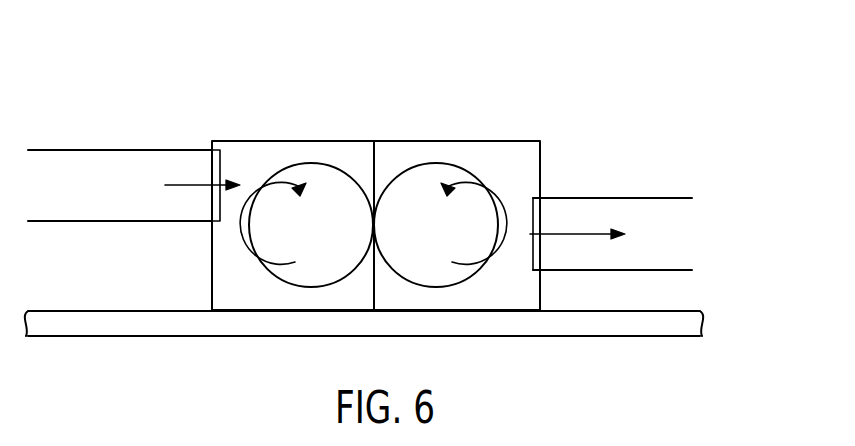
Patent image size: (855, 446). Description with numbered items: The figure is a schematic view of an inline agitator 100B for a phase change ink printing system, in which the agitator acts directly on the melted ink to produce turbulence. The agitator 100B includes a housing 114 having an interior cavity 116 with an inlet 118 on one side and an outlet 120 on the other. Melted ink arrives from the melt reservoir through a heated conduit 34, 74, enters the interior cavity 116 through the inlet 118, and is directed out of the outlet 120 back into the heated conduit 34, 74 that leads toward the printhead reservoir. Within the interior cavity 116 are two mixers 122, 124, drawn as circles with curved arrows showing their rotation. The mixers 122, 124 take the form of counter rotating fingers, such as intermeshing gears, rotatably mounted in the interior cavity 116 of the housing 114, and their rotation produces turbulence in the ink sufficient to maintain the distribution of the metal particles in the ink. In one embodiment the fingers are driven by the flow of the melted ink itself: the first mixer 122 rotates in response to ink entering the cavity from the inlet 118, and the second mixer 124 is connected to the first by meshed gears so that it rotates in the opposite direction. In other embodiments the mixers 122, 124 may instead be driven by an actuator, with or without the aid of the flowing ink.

The agitator 100B is at (205, 115).
The heated conduit 34 is at (388, 182).
The heated conduit 74 is at (118, 150).
The housing 114 is at (337, 140).
The interior cavity 116 is at (397, 163).
The inlet 118 is at (222, 172).
The outlet 120 is at (533, 228).
The mixer 122 is at (310, 287).
The mixer 124 is at (437, 287).